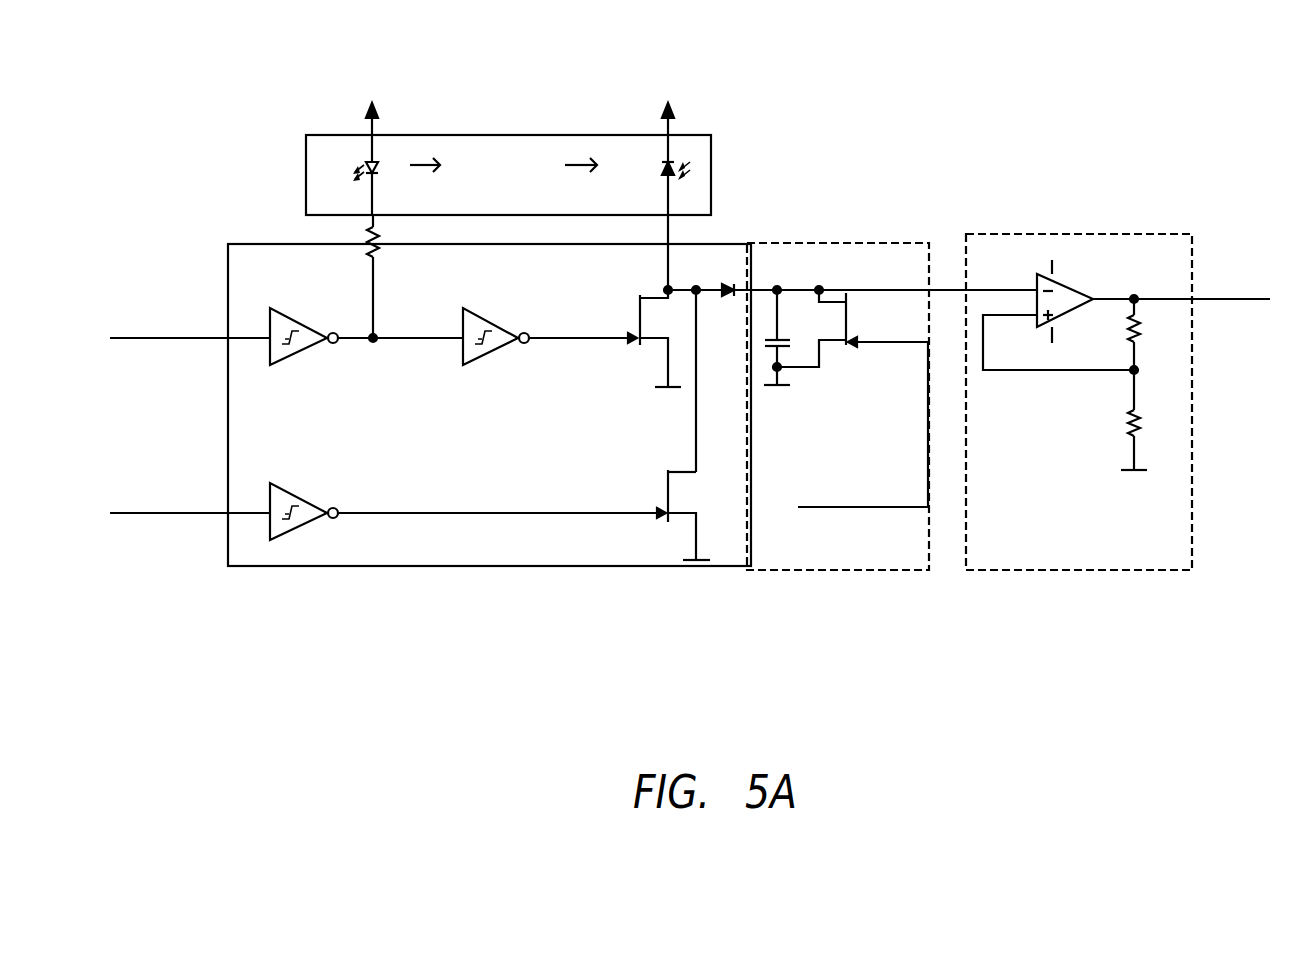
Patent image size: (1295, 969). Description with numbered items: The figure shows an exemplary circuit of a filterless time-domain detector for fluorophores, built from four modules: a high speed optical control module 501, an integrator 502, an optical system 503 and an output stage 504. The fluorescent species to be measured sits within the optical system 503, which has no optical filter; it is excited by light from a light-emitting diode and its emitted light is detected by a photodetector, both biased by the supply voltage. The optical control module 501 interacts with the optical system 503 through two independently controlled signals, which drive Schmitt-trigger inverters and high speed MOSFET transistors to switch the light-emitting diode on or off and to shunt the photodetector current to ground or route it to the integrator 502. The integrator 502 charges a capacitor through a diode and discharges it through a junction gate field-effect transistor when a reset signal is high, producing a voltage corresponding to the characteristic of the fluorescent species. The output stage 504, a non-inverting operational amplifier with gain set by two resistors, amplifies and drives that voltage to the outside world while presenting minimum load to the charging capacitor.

The high speed optical control module 501 is at (498, 566).
The integrator 502 is at (849, 570).
The optical system 503 is at (519, 135).
The output stage 504 is at (1085, 570).